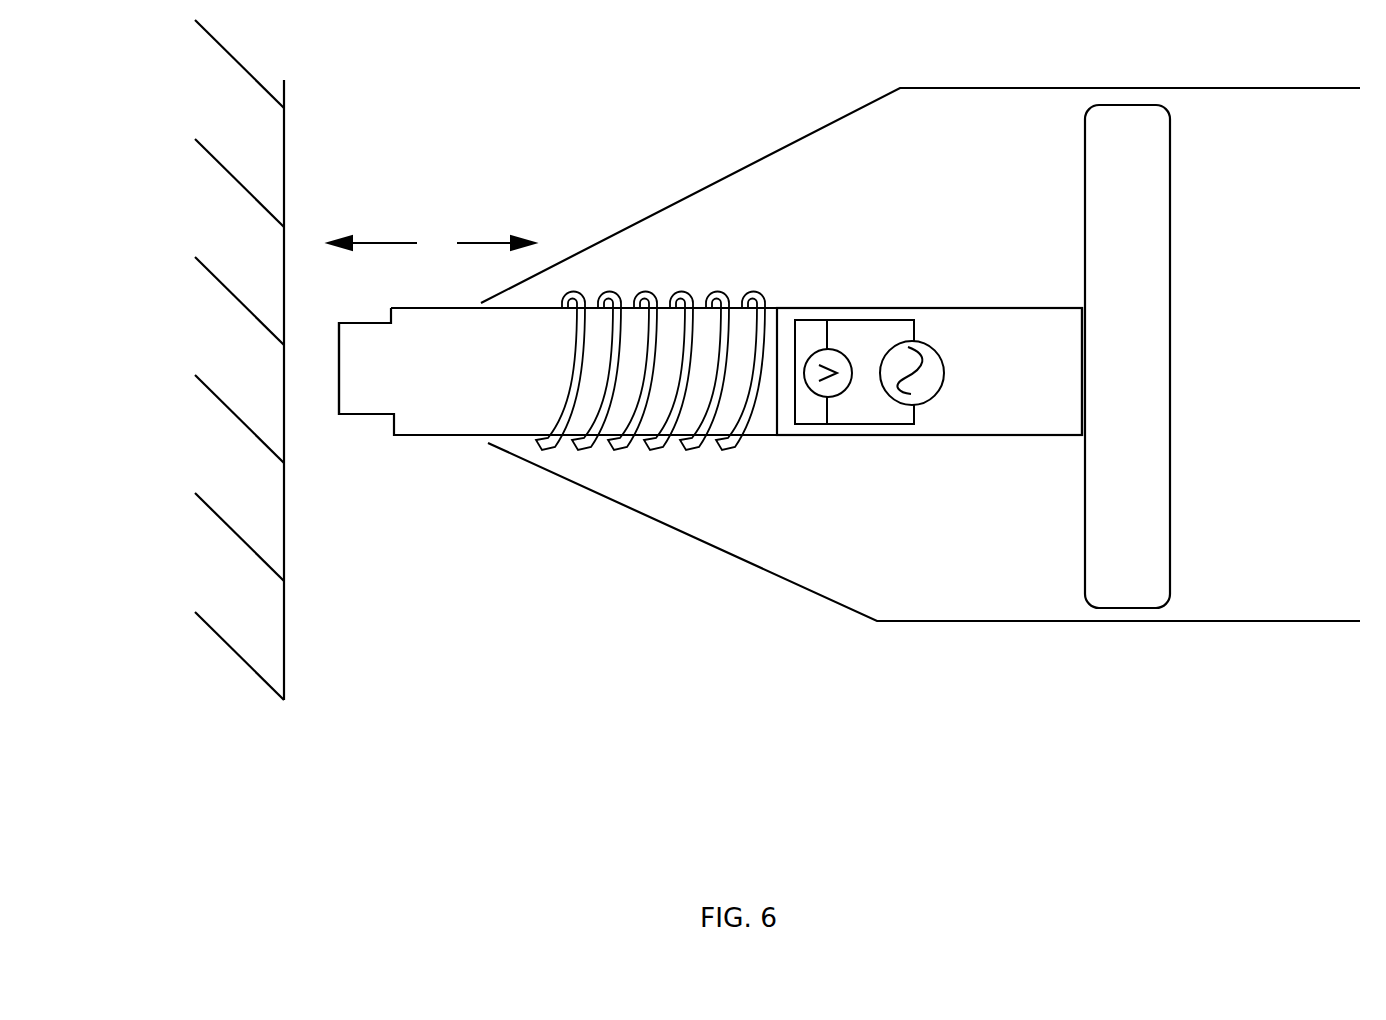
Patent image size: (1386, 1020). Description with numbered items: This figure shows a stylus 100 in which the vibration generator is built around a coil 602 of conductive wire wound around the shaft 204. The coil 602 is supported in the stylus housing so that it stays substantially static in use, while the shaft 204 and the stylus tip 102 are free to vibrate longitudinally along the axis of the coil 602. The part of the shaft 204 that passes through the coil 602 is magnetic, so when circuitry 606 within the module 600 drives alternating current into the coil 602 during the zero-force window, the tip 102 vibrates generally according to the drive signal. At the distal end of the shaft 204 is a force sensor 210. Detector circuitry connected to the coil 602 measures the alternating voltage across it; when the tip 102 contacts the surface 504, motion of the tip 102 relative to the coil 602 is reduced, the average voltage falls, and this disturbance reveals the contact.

The stylus 100 is at (768, 104).
The stylus tip 102 is at (340, 414).
The shaft 204 is at (467, 384).
The force sensor 210 is at (1170, 365).
The surface 504 is at (153, 339).
The electronics module 600 is at (1030, 376).
The coil 602 is at (682, 290).
The drive circuit 606 is at (865, 432).